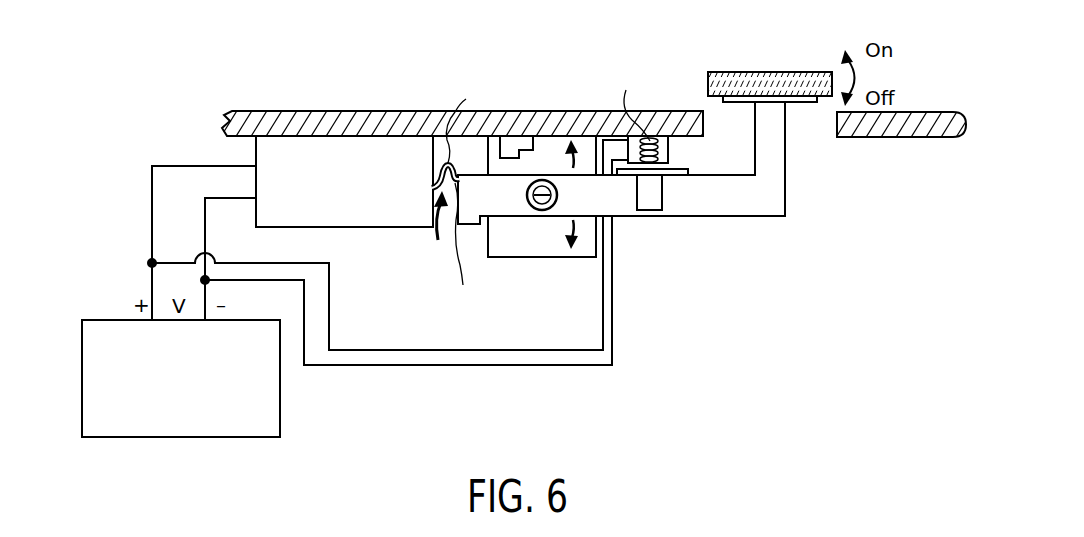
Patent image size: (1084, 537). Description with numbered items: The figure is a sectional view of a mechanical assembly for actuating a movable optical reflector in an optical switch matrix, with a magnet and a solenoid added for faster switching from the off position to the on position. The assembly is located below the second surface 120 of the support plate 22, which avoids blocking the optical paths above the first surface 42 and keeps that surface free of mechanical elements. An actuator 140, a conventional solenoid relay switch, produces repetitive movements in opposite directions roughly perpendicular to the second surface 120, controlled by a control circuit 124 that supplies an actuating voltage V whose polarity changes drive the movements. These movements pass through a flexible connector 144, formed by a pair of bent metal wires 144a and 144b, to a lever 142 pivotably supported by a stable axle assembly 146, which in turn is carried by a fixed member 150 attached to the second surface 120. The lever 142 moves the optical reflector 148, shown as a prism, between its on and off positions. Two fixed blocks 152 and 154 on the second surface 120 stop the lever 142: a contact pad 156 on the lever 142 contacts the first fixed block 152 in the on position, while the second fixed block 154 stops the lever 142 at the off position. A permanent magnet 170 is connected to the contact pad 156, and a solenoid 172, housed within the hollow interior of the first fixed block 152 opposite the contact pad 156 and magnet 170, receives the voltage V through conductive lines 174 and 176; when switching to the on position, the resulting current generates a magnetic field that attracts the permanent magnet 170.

The support plate 22 is at (912, 122).
The first surface 42 is at (940, 112).
The second surface 120 is at (905, 139).
The control circuit 124 is at (228, 427).
The actuator 140 is at (372, 229).
The lever 142 is at (716, 218).
The flexible connector 144 is at (434, 223).
The bent metal wire 144a is at (481, 123).
The bent metal wire 144b is at (465, 245).
The axle assembly 146 is at (558, 195).
The movable optical reflector 148 is at (773, 72).
The fixed member 150 is at (542, 252).
The first fixed block 152 is at (669, 150).
The second fixed block 154 is at (532, 150).
The contact pad 156 is at (673, 172).
The magnet 170 is at (648, 205).
The solenoid 172 is at (628, 102).
The conductive line 174 is at (362, 350).
The conductive line 176 is at (378, 366).